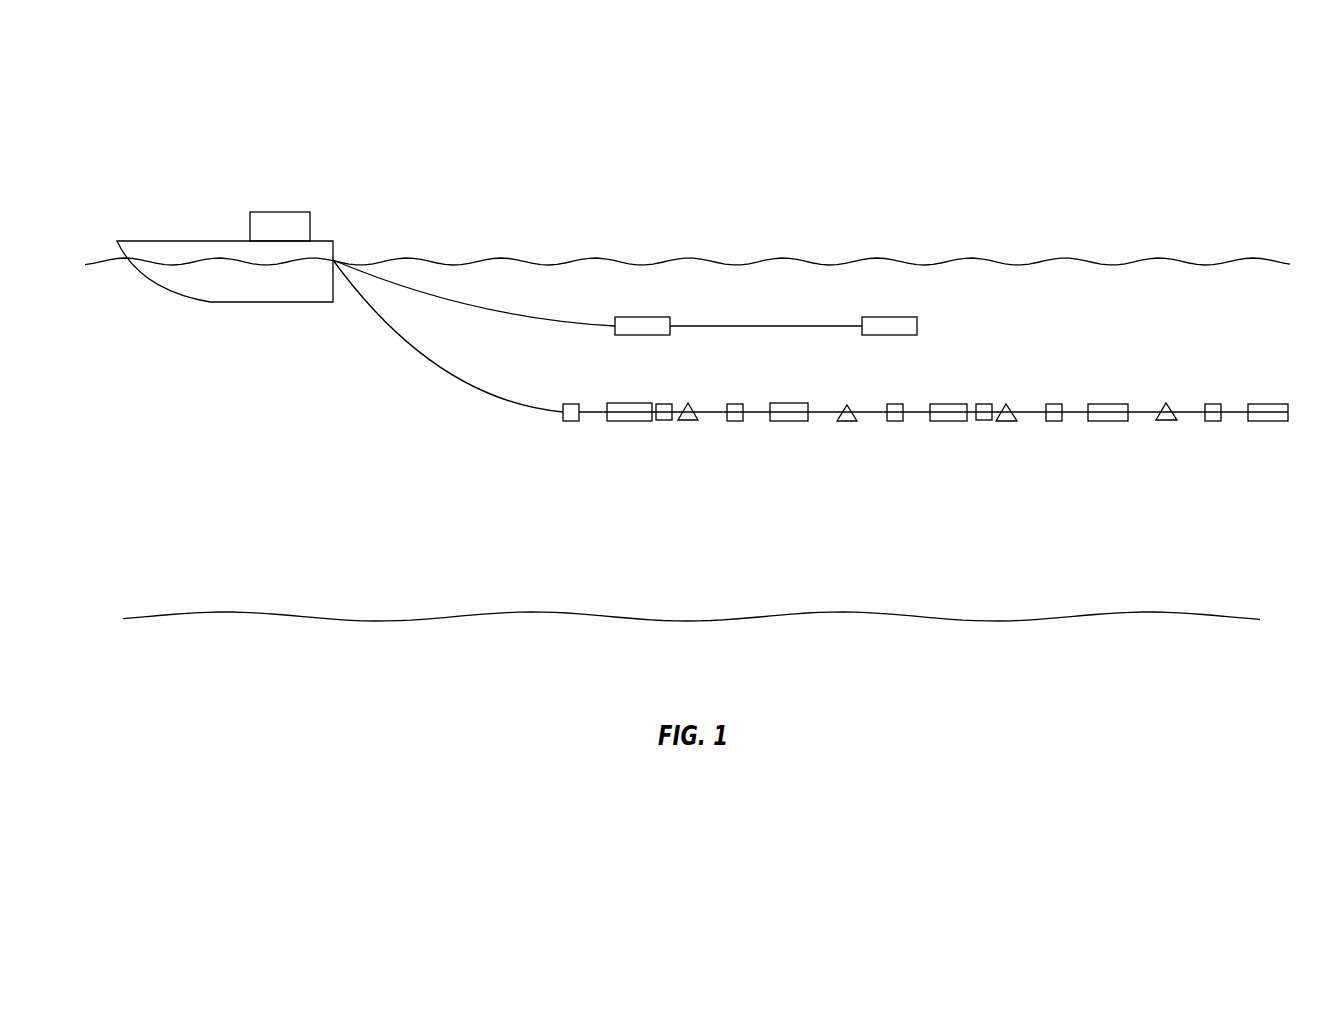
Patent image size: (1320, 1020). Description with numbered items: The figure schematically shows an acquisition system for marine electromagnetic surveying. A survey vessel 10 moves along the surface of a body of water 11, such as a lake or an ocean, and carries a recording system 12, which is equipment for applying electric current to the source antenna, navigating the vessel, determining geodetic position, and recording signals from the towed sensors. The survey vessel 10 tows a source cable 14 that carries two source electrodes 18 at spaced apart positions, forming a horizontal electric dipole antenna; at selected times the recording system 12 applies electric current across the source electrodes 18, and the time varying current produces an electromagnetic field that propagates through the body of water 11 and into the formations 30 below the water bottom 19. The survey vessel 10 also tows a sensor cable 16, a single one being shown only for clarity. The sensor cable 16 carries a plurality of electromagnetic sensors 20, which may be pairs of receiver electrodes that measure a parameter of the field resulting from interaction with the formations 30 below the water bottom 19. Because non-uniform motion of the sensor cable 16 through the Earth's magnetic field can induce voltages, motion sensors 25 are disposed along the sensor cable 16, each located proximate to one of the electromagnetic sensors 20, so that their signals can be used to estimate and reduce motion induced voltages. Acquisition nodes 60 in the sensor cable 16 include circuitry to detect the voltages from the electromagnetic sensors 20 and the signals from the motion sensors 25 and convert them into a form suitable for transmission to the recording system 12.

The survey vessel 10 is at (177, 240).
The body of water 11 is at (212, 436).
The recording system 12 is at (280, 210).
The source cable 14 is at (498, 313).
The sensor cable 16 is at (440, 367).
The source electrodes 18 is at (643, 315).
The water bottom 19 is at (382, 618).
The electromagnetic sensors 20 is at (630, 422).
The motion sensors 25 is at (568, 404).
The formations 30 is at (447, 716).
The acquisition nodes 60 is at (663, 422).